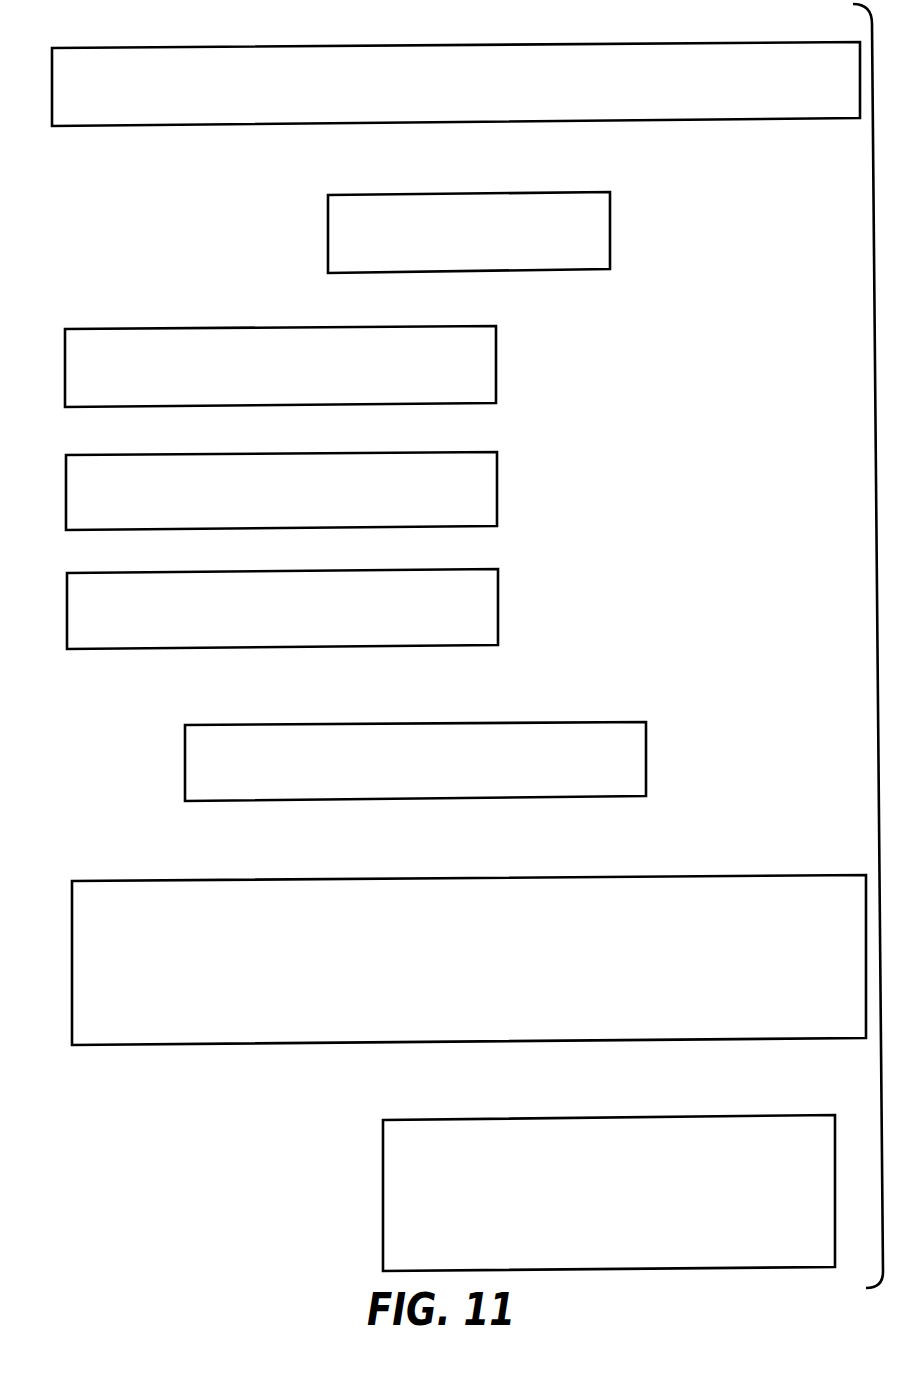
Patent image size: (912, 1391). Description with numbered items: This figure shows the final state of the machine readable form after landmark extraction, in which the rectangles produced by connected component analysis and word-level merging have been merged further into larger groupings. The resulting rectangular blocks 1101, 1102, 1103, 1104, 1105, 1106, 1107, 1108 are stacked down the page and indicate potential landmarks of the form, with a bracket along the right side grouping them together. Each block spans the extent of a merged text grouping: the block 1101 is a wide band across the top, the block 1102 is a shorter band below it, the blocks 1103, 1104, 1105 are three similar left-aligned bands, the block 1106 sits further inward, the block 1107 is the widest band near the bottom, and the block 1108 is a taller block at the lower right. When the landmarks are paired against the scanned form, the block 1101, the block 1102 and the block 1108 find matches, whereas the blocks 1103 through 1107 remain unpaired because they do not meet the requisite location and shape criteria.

The block 1101 is at (730, 50).
The block 1102 is at (567, 198).
The block 1103 is at (469, 327).
The block 1104 is at (473, 450).
The block 1105 is at (465, 573).
The block 1106 is at (560, 720).
The block 1107 is at (673, 877).
The block 1108 is at (670, 1115).